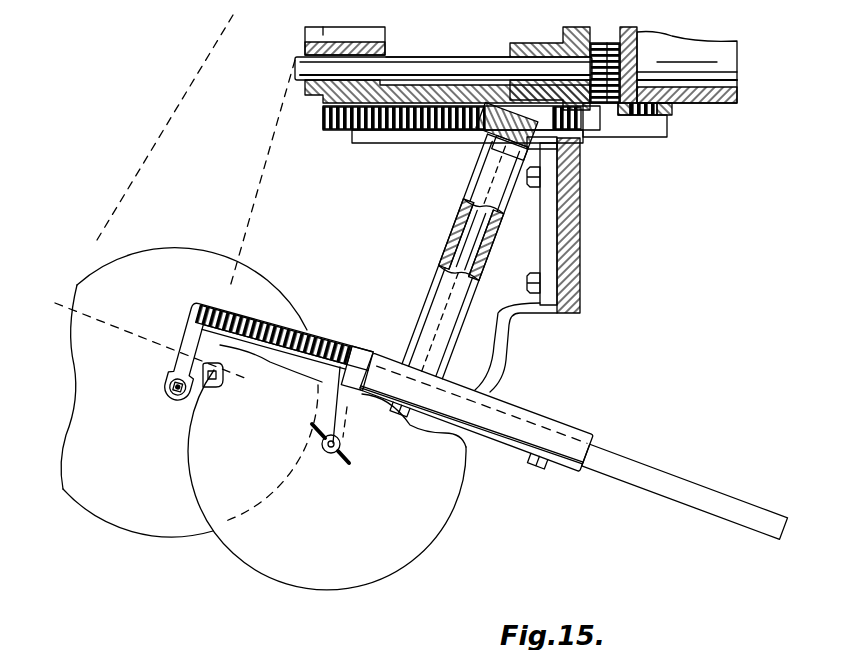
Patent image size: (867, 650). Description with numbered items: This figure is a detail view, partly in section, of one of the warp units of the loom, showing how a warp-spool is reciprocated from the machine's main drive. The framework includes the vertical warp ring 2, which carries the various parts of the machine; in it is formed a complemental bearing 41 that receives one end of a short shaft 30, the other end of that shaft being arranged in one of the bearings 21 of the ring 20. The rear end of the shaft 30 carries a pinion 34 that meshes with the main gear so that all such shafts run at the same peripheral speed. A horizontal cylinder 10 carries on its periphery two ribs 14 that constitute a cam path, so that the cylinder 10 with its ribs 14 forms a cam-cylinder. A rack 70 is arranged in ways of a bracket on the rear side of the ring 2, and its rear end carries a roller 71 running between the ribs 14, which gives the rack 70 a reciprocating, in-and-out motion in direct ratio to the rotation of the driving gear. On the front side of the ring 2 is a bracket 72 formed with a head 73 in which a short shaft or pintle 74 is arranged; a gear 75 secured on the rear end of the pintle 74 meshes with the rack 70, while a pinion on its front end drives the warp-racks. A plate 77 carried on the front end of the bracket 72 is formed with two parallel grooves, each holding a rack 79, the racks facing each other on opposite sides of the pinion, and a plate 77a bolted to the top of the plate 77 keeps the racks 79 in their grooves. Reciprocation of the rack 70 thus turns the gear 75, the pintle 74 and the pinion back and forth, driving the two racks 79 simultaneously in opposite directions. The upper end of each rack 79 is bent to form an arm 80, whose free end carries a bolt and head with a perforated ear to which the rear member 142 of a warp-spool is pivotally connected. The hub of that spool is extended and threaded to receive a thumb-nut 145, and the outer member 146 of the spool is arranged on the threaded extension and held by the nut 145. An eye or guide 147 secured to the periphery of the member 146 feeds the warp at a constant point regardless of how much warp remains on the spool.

The warp ring 2 is at (570, 273).
The horizontal cylinder 10 is at (736, 107).
The ribs 14 is at (672, 112).
The ring 20 is at (302, 97).
The bearings 21 is at (297, 74).
The short shaft 30 is at (446, 68).
The pinion 34 is at (605, 95).
The complemental bearing 41 is at (512, 46).
The rack 70 is at (337, 128).
The roller 71 is at (650, 116).
The bracket 72 is at (523, 241).
The head 73 is at (423, 303).
The pintle 74 is at (473, 224).
The gear 75 is at (573, 142).
The plate 77 is at (557, 418).
The plate 77a is at (567, 463).
The rack 79 is at (662, 488).
The arm 80 is at (203, 300).
The rear member of warp-spool 142 is at (133, 510).
The thumb-nut 145 is at (339, 470).
The outer member of the spool 146 is at (253, 548).
The eye or guide 147 is at (207, 388).